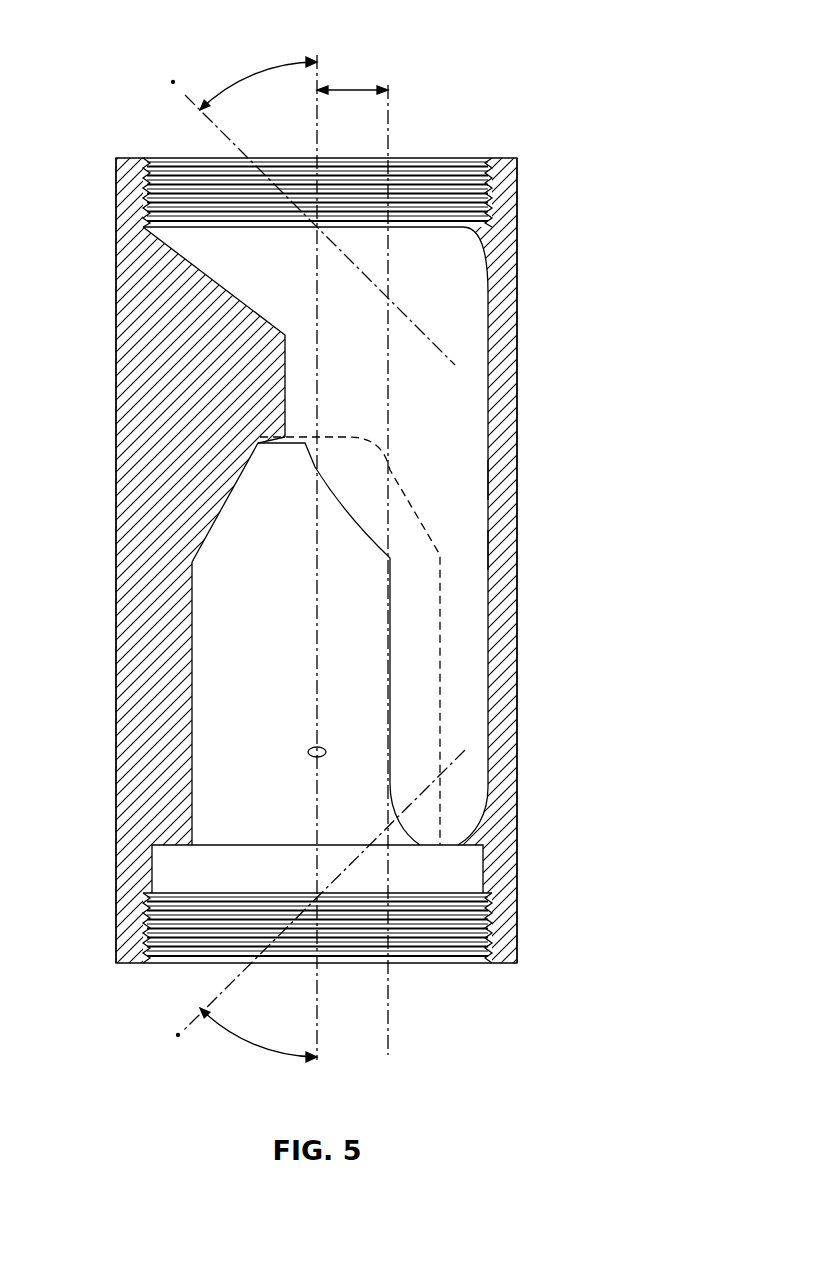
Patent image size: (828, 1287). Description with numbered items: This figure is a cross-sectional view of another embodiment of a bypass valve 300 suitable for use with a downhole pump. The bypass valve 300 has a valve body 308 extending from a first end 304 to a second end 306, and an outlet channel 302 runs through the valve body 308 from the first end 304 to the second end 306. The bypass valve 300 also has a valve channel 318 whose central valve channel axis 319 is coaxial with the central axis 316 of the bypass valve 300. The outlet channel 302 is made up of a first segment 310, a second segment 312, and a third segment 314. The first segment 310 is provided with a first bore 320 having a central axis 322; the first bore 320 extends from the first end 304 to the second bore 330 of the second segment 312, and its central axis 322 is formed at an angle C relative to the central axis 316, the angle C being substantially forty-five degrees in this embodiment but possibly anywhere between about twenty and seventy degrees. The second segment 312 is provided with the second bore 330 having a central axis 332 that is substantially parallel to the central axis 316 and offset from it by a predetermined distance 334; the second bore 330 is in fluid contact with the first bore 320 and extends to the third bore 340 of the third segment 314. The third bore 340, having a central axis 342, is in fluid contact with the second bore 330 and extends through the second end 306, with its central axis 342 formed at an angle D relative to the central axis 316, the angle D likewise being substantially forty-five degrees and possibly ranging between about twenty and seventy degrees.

The bypass valve 300 is at (627, 167).
The outlet channel 302 is at (488, 410).
The first end 304 is at (130, 963).
The second end 306 is at (510, 158).
The valve body 308 is at (517, 280).
The first segment 310 is at (478, 802).
The second segment 312 is at (488, 478).
The third segment 314 is at (213, 245).
The central axis 316 is at (317, 1055).
The valve channel 318 is at (192, 742).
The central valve channel axis 319 is at (308, 755).
The first bore 320 is at (470, 828).
The central axis 322 is at (182, 1028).
The second bore 330 is at (488, 548).
The central axis 332 is at (388, 1030).
The predetermined distance 334 is at (355, 88).
The third bore 340 is at (243, 275).
The central axis 342 is at (182, 90).
The angle C is at (255, 1045).
The angle D is at (260, 68).